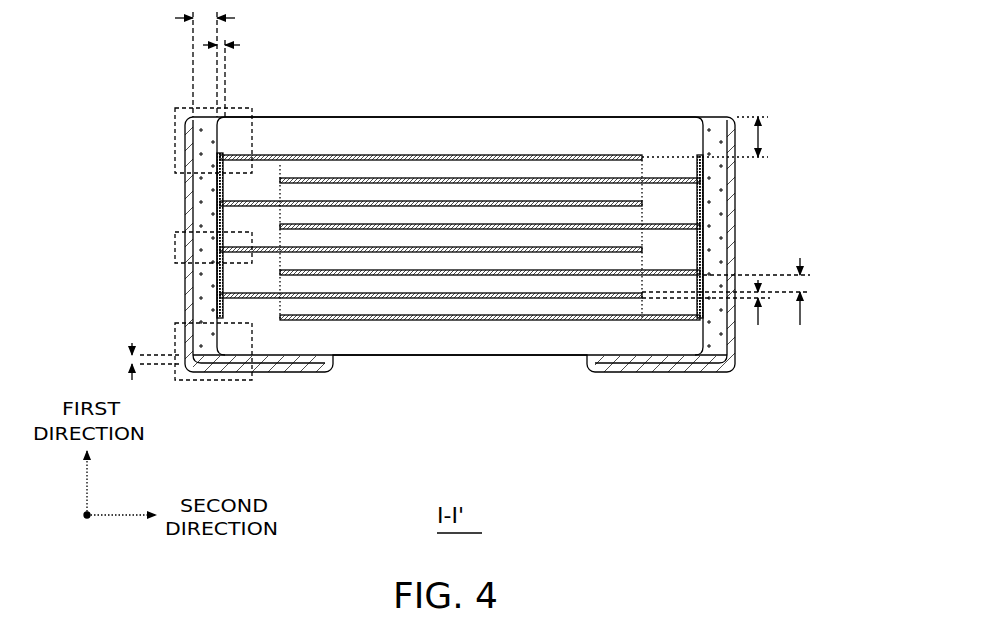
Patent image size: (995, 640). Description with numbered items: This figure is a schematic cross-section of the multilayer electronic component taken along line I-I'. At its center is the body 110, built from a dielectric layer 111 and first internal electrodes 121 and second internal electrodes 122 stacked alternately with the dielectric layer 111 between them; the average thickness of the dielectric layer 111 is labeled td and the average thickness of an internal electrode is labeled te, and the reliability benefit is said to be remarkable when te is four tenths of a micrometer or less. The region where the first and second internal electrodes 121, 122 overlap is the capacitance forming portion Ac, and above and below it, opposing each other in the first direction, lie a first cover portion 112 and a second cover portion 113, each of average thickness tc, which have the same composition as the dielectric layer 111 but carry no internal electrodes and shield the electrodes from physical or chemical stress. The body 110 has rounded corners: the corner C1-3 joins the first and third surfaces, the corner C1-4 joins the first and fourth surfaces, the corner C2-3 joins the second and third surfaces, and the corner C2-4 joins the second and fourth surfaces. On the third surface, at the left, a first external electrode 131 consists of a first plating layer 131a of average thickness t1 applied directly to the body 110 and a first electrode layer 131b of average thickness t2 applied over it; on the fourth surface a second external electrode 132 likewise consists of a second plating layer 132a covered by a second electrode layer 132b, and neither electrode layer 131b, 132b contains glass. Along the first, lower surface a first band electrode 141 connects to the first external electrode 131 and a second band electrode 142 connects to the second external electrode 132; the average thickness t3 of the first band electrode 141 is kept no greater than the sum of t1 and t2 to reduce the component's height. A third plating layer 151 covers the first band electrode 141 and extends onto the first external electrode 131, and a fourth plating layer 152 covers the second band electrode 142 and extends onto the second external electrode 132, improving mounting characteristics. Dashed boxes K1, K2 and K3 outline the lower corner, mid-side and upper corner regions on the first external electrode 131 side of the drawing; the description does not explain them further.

The body 110 is at (365, 117).
The dielectric layer 111 is at (325, 192).
The first cover portion 112 is at (462, 135).
The second cover portion 113 is at (461, 342).
The first internal electrode 121 is at (526, 155).
The second internal electrode 122 is at (596, 178).
The first external electrode 131 is at (190, 240).
The first plating layer 131a is at (220, 203).
The first electrode layer 131b is at (205, 220).
The second external electrode 132 is at (732, 240).
The second plating layer 132a is at (700, 205).
The second electrode layer 132b is at (715, 222).
The first band electrode 141 is at (326, 365).
The second band electrode 142 is at (618, 366).
The third plating layer 151 is at (189, 193).
The fourth plating layer 152 is at (730, 192).
The capacitance forming portion Ac is at (533, 321).
The 1-3th corner C1-3 is at (226, 350).
The 1-4th corner C1-4 is at (690, 352).
The 2-3th corner C2-3 is at (226, 121).
The 2-4th corner C2-4 is at (692, 121).
The first region K1 is at (175, 336).
The second region K2 is at (175, 254).
The third region K3 is at (175, 118).
The average thickness of first plating layer t1 is at (233, 73).
The average thickness of first electrode layer t2 is at (205, 58).
The average thickness of first band electrode t3 is at (142, 361).
The average thickness of cover portion tc is at (713, 137).
The average thickness of internal electrode te is at (726, 301).
The average thickness of dielectric layer td is at (813, 293).